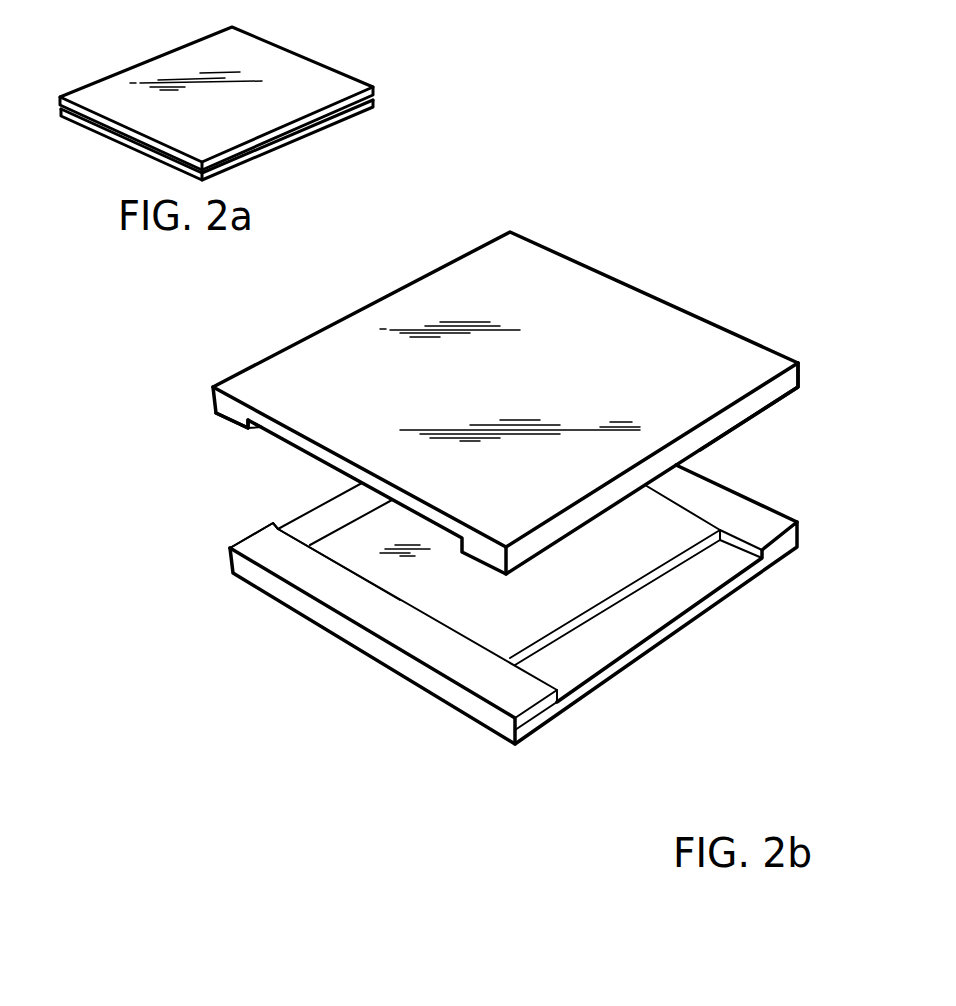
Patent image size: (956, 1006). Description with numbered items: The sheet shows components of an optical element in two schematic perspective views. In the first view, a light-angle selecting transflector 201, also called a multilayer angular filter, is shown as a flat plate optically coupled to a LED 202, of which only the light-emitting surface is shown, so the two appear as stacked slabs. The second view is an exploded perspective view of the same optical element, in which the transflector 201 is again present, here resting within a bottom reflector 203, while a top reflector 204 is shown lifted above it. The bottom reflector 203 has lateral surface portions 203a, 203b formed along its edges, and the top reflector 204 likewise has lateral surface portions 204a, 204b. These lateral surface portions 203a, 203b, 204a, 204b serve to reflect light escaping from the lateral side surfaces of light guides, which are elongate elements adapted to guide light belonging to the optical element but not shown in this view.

In FIG. 2a, the light-angle selecting transflector 201 is at (342, 72).
In FIG. 2b, the light-angle selecting transflector 201 is at (673, 567).
In FIG. 2a, the LED 202 is at (330, 123).
In FIG. 2b, the bottom reflector 203 is at (505, 661).
In FIG. 2b, the lateral surface portion 203a is at (257, 542).
In FIG. 2b, the lateral surface portion 203b is at (777, 520).
In FIG. 2b, the top reflector 204 is at (490, 373).
In FIG. 2b, the lateral surface portion 204a is at (230, 421).
In FIG. 2b, the lateral surface portion 204b is at (765, 408).